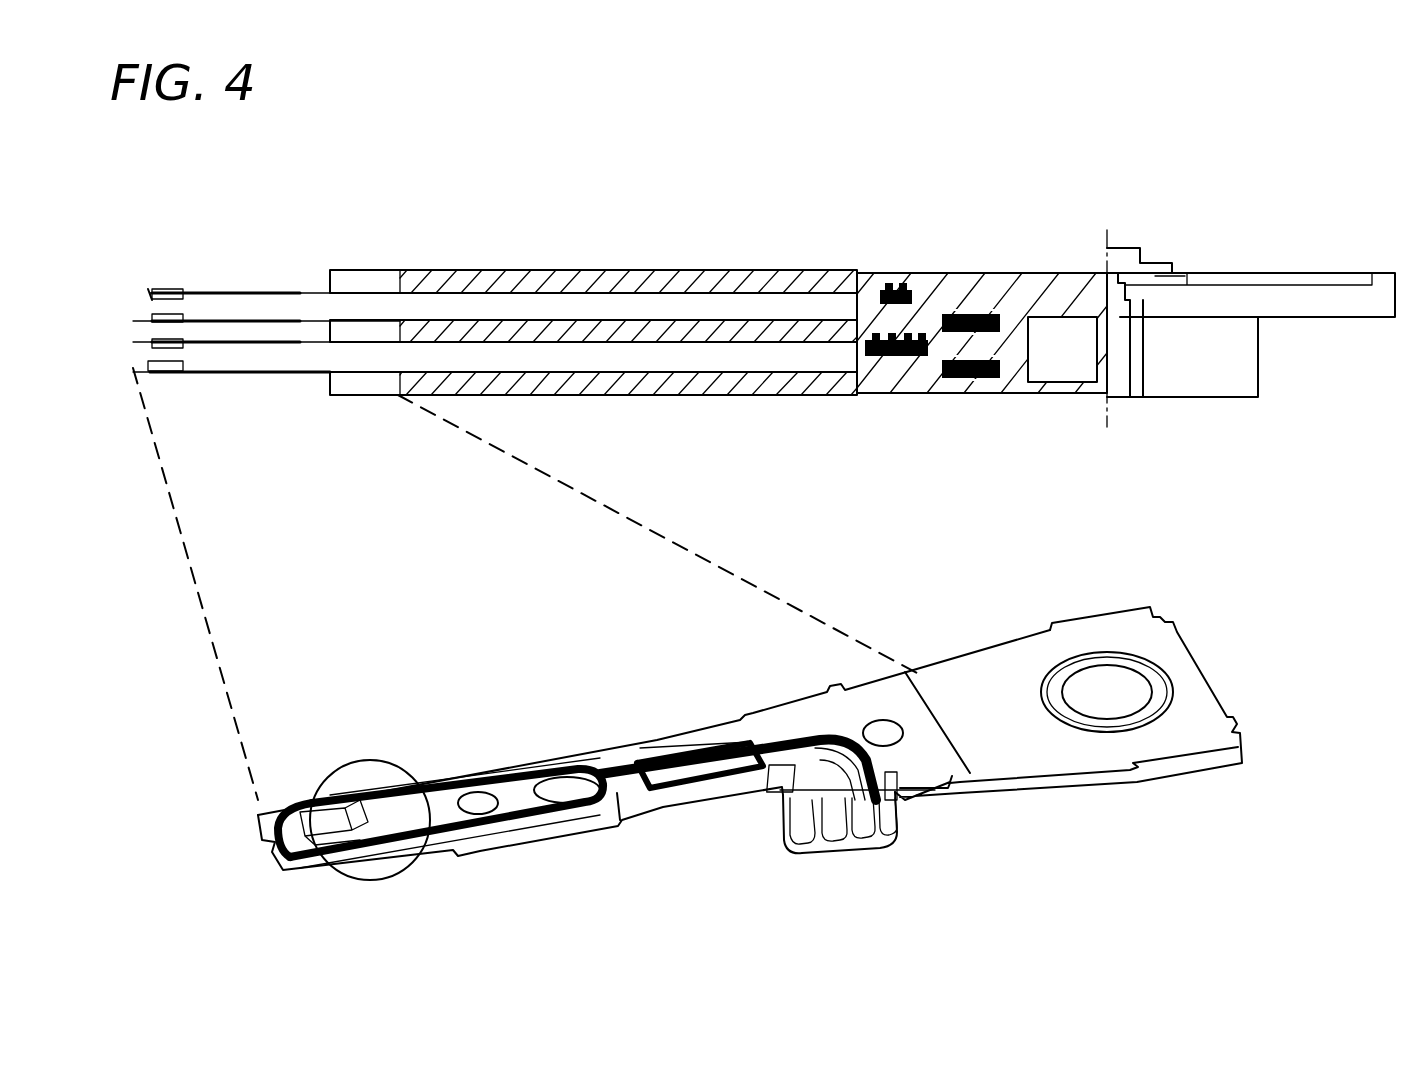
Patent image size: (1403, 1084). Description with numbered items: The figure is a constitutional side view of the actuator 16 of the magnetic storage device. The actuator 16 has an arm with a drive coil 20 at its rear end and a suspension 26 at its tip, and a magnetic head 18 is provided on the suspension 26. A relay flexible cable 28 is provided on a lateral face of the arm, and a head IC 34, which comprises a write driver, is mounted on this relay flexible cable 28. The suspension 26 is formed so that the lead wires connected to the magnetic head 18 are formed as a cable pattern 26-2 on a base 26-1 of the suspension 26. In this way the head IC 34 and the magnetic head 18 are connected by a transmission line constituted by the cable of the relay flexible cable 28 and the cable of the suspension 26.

The actuator 16 is at (887, 273).
The magnetic head 18 is at (150, 294).
The drive coil 20 is at (1330, 274).
The suspension 26 is at (275, 288).
The base 26-1 is at (690, 740).
The cable pattern 26-2 is at (622, 790).
The relay flexible cable 28 is at (662, 283).
The head IC 34 is at (1057, 335).